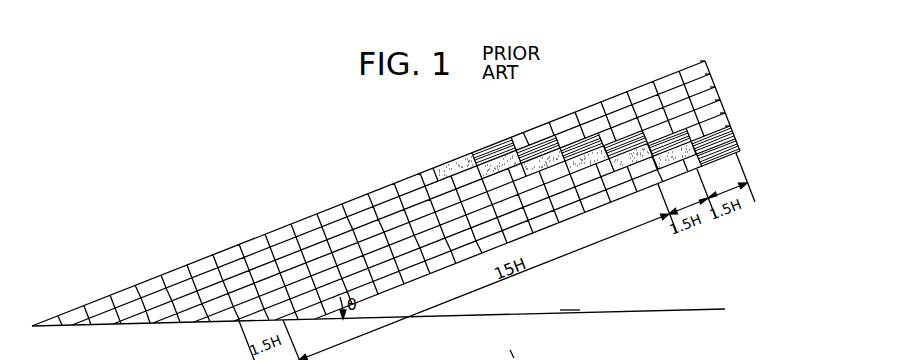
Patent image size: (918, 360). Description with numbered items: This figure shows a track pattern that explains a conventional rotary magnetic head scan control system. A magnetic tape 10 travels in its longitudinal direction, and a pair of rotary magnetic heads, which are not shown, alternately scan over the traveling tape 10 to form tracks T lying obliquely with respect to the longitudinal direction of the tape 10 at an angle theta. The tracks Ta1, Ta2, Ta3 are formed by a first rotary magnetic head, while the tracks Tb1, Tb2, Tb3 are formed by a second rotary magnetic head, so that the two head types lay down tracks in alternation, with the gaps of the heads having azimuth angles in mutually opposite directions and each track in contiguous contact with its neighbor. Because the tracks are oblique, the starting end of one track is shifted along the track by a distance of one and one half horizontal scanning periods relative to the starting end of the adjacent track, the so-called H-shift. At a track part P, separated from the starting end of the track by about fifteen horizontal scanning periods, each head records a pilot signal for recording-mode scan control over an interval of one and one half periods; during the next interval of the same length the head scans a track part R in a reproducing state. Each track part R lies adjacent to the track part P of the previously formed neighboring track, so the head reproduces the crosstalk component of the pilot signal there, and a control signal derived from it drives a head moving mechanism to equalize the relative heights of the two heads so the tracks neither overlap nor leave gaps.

The tracks T is at (332, 207).
The track part P is at (452, 160).
The track part R is at (478, 154).
The track Ta1 is at (732, 128).
The track Ta2 is at (722, 101).
The track Ta3 is at (712, 75).
The track Tb1 is at (727, 114).
The track Tb2 is at (717, 88).
The track Tb3 is at (702, 60).
The magnetic tape 10 is at (568, 310).